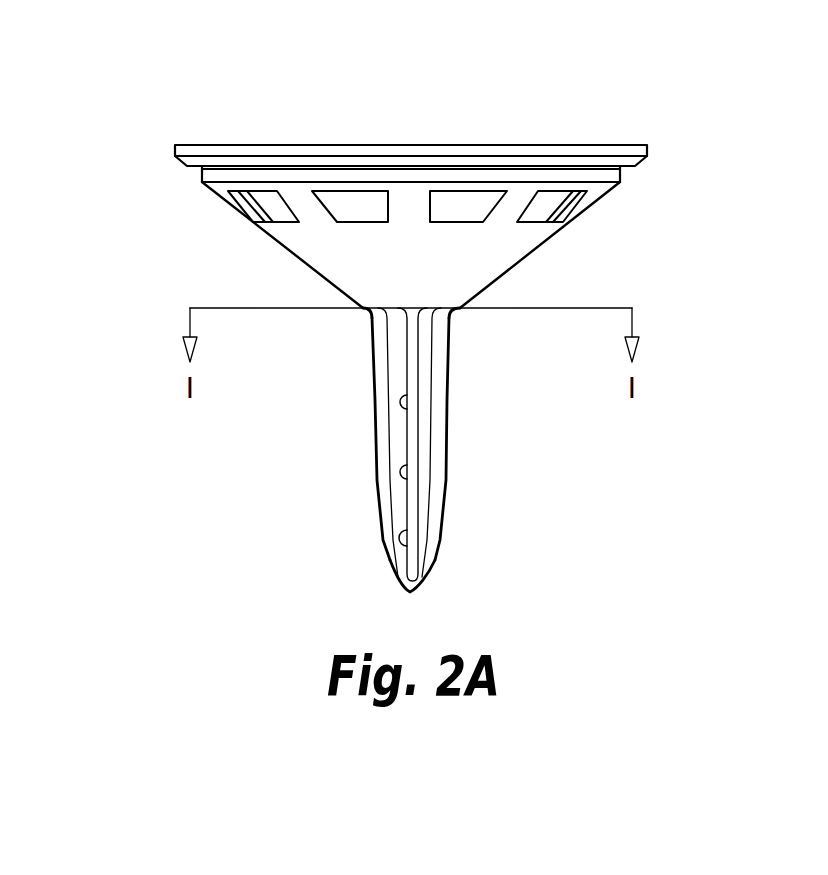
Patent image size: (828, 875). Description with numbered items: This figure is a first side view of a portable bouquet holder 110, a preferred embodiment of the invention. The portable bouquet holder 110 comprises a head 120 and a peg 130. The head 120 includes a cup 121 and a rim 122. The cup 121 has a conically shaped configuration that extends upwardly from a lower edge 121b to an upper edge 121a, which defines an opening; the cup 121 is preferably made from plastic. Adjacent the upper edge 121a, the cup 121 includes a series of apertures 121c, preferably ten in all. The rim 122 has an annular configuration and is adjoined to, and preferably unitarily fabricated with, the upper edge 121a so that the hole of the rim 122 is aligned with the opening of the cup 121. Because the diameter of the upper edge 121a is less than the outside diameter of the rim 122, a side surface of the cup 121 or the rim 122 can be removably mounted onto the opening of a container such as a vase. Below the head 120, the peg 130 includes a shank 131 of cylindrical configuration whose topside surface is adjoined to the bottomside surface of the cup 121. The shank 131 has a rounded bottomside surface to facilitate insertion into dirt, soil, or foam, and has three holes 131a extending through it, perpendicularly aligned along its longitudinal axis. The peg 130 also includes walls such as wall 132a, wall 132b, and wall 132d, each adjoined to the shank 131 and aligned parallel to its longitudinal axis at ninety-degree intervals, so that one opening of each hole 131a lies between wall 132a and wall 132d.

The portable bouquet holder 110 is at (591, 86).
The rim 122 is at (173, 145).
The head 120 is at (549, 267).
The cup 121 is at (286, 273).
The upper edge 121a is at (203, 182).
The lower edge 121b is at (363, 310).
The aperture 121c is at (270, 203).
The peg 130 is at (472, 517).
The shank 131 is at (420, 391).
The hole 131a is at (396, 401).
The wall 132a is at (410, 560).
The wall 132b is at (447, 443).
The wall 132d is at (373, 333).